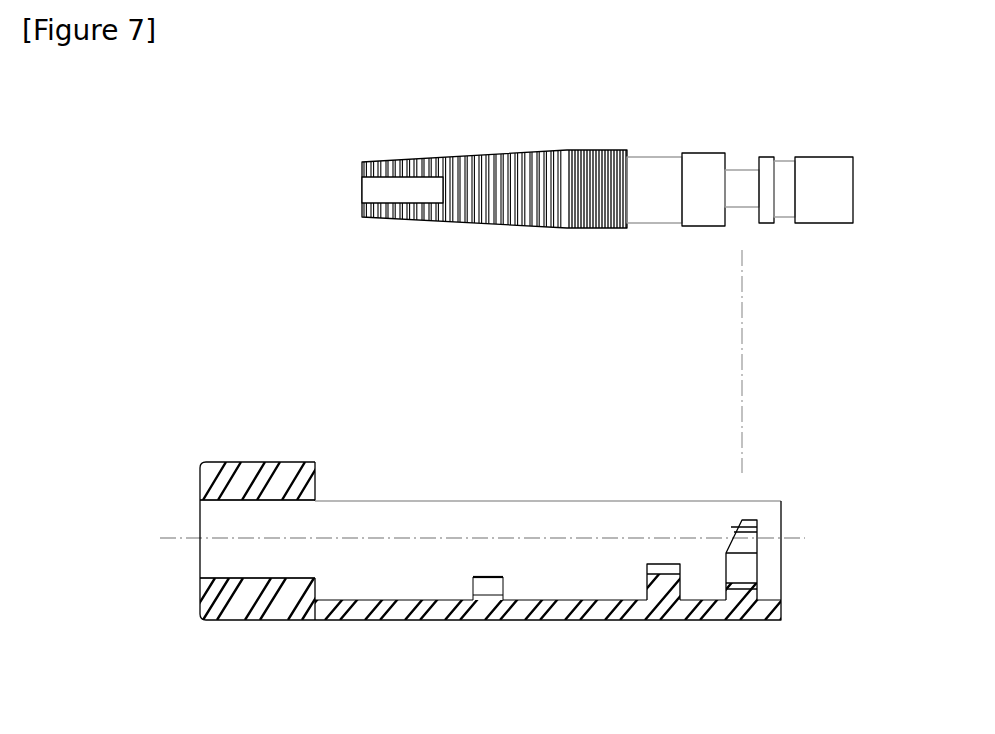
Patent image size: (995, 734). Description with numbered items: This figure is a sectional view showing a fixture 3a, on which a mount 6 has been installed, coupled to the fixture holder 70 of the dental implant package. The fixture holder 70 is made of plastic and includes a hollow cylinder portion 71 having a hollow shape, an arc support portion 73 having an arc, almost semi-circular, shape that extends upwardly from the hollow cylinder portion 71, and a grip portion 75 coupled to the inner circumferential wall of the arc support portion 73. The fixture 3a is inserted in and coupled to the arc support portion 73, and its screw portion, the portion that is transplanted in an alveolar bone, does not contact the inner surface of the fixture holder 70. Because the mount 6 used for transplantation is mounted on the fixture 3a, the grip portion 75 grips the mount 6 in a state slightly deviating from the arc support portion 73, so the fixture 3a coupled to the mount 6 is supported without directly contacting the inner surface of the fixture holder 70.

The fixture 3a is at (492, 150).
The mount 6 is at (705, 160).
The fixture holder 70 is at (457, 509).
The hollow cylinder portion 71 is at (207, 598).
The arc support portion 73 is at (471, 501).
The grip portion 75 is at (755, 547).